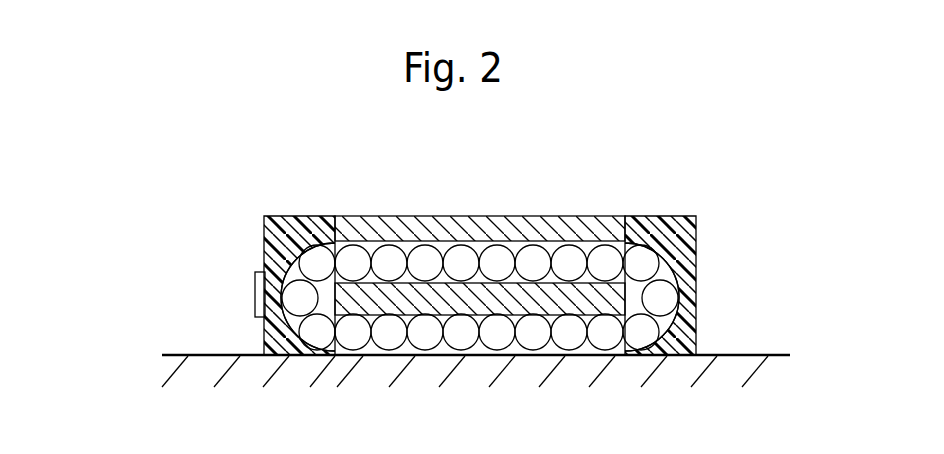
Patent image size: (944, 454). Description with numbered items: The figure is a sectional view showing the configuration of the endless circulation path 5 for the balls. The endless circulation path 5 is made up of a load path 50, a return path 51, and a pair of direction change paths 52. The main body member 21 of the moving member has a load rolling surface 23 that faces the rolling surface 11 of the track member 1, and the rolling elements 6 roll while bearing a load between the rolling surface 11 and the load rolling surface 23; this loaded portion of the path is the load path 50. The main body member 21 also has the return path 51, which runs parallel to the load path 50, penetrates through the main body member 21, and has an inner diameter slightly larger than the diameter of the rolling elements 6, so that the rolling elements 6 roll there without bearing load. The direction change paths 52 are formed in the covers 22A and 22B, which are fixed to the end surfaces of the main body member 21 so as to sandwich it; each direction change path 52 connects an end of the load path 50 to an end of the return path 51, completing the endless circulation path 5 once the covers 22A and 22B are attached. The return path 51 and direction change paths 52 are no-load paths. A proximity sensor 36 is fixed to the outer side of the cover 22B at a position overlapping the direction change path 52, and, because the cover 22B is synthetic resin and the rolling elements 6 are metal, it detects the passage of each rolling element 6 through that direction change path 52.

The track member 1 is at (177, 350).
The rolling surface 11 is at (218, 356).
The main body member 21 is at (443, 216).
The cover 22A is at (694, 309).
The cover 22B is at (281, 218).
The load rolling surface 23 is at (483, 355).
The proximity sensor 36 is at (257, 300).
The endless circulation path 5 is at (548, 233).
The load path 50 is at (480, 304).
The return path 51 is at (483, 247).
The direction change path 52 is at (266, 264).
The rolling element 6 is at (570, 338).